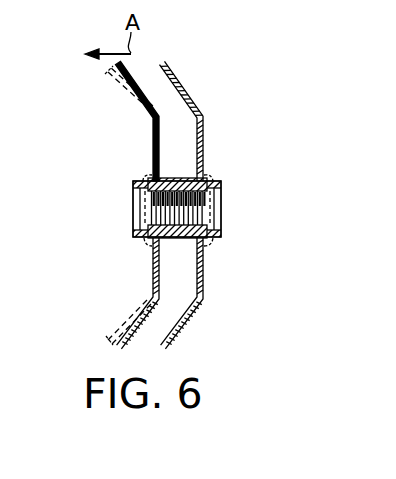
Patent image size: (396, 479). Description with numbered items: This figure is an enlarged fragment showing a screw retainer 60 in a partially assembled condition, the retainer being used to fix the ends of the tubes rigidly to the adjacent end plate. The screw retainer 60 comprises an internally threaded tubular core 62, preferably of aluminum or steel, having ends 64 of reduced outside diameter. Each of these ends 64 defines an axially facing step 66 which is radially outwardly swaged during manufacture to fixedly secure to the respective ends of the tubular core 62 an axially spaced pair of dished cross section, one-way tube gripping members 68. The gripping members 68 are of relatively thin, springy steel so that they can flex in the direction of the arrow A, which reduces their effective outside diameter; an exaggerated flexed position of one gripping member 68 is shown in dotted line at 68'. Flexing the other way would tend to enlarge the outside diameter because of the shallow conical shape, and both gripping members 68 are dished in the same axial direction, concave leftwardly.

The screw retainer 60 is at (236, 223).
The internally threaded tubular core 62 is at (180, 178).
The ends of reduced outside diameter 64 is at (217, 179).
The axially facing step 66 is at (207, 174).
The one-way tube gripping member 68 is at (180, 205).
The flexed position of the gripping member 68' is at (95, 205).